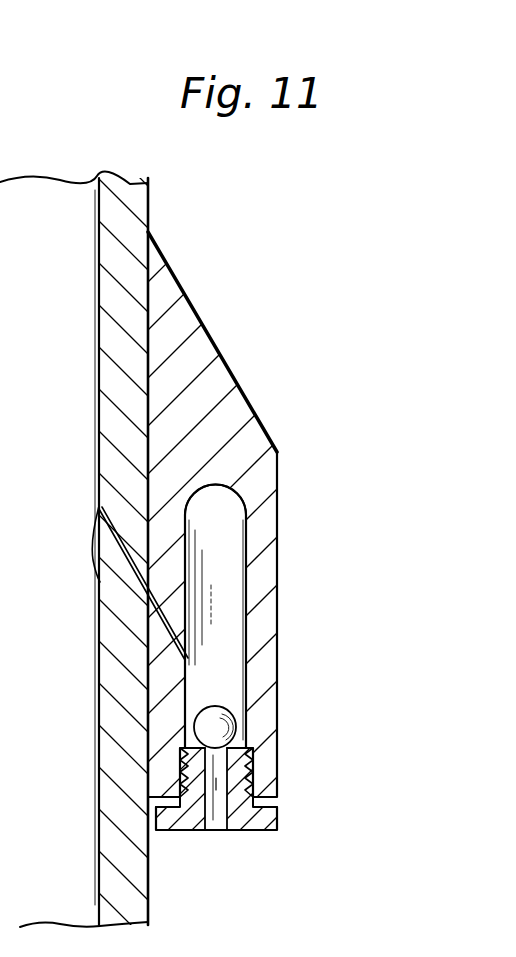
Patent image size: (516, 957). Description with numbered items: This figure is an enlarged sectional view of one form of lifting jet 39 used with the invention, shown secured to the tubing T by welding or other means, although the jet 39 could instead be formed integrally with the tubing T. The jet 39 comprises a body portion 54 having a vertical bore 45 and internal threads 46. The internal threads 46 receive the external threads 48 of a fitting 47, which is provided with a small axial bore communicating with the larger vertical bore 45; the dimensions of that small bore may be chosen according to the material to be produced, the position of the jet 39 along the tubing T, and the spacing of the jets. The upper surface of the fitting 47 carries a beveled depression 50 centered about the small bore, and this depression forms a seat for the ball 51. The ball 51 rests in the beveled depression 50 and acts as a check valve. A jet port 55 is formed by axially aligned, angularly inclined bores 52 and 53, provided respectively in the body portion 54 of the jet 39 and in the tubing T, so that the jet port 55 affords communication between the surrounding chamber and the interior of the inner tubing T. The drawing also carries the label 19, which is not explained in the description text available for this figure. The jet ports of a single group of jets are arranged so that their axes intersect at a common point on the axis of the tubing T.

The tubing T is at (132, 212).
The angularly inclined bore 52 is at (150, 690).
The jet 39 is at (233, 342).
The body portion 54 is at (262, 469).
The vertical bore 45 is at (236, 577).
The angularly inclined bore 53 is at (120, 622).
The jet port 55 is at (112, 557).
The ball 51 is at (237, 713).
The beveled depression 50 is at (238, 750).
The internal threads 46 is at (251, 773).
The external threads 48 is at (257, 803).
The fitting 47 is at (248, 827).
The pin shank 19 is at (226, 806).